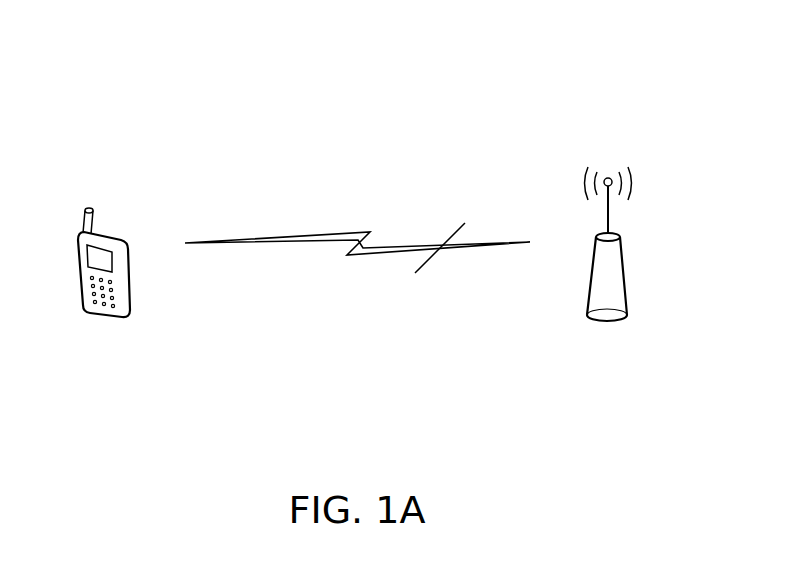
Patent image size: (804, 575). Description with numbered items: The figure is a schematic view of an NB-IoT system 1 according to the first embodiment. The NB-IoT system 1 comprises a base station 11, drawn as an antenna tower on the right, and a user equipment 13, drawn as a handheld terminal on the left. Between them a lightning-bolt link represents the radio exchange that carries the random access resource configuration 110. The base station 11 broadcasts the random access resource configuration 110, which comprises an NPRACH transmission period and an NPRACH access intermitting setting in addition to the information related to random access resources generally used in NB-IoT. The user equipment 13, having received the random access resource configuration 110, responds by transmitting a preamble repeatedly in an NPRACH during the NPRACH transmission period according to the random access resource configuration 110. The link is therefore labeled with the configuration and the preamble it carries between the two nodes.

The NB-IoT system 1 is at (356, 133).
The base station 11 is at (605, 320).
The user equipment 13 is at (108, 318).
The random access resource configuration 110 is at (440, 252).